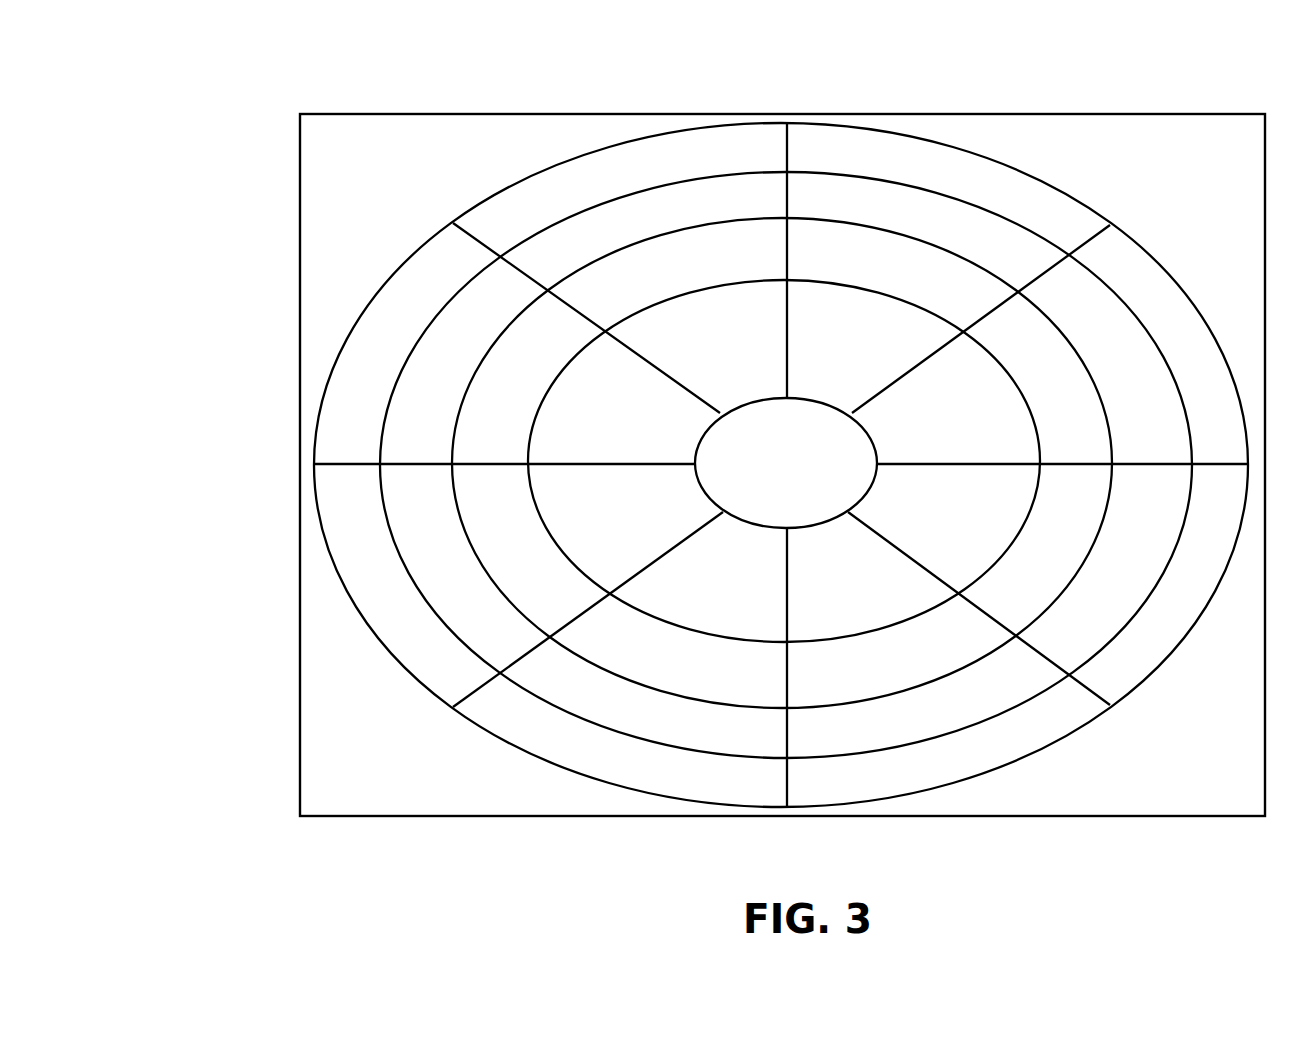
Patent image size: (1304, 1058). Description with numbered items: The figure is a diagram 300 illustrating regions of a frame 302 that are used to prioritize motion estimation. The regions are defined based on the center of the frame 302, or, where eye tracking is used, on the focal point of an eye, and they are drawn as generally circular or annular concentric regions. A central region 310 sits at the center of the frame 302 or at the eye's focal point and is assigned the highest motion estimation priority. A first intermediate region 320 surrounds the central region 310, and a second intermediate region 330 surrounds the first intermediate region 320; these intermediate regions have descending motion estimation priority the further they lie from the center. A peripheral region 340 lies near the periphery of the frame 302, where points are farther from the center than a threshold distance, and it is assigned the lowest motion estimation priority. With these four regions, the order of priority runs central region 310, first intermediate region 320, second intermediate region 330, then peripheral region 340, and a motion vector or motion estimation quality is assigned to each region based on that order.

The diagram 300 is at (717, 416).
The frame 302 is at (343, 112).
The central region 310 is at (762, 442).
The first intermediate region 320 is at (688, 348).
The second intermediate region 330 is at (898, 155).
The peripheral region 340 is at (465, 165).